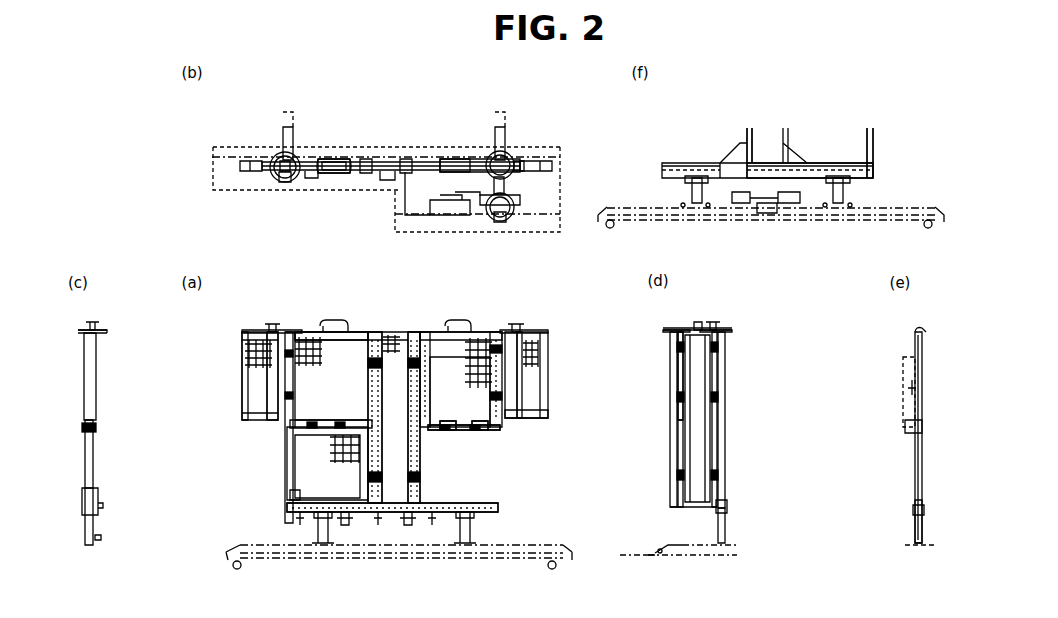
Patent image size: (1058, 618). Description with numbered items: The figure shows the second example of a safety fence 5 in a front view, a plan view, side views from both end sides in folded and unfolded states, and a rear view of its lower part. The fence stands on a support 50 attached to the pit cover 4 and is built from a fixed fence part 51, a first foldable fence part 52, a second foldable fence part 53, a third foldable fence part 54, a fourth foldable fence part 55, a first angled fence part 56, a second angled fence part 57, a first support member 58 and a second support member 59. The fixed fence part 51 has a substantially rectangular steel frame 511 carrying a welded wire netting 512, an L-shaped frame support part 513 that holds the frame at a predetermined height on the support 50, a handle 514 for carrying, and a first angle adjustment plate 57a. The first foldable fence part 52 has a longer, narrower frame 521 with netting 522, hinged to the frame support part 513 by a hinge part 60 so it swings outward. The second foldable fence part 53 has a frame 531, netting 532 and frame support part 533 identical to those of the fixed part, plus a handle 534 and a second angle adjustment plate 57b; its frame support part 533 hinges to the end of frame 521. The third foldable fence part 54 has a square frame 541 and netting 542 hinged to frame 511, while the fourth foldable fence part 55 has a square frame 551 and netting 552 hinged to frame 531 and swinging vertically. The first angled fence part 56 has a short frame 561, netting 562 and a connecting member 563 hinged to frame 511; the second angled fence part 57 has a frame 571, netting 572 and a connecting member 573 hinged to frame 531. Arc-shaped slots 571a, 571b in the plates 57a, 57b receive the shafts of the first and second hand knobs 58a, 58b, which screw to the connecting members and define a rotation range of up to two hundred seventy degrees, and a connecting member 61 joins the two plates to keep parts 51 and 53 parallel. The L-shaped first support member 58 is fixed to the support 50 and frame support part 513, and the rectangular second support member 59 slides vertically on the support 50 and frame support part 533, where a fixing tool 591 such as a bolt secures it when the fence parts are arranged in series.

The pit cover 4 is at (908, 545).
The safety fence 5 is at (943, 340).
The support 50 is at (915, 520).
The fixed fence part 51 is at (918, 345).
The frame 511 is at (428, 332).
The welded wire netting 512 is at (494, 340).
The frame support part 513 is at (740, 150).
The handle 514 is at (915, 328).
The first foldable fence part 52 is at (710, 445).
The frame 521 is at (775, 140).
The welded wire netting 522 is at (400, 332).
The second foldable fence part 53 is at (358, 258).
The frame 531 is at (358, 332).
The welded wire netting 532 is at (312, 340).
The frame support part 533 is at (366, 418).
The handle 534 is at (334, 320).
The third foldable fence part 54 is at (915, 430).
The frame 541 is at (480, 428).
The welded wire netting 542 is at (480, 430).
The fourth foldable fence part 55 is at (670, 458).
The frame 551 is at (865, 150).
The welded wire netting 552 is at (330, 445).
The first angled fence part 56 is at (718, 378).
The frame 561 is at (545, 390).
The welded wire netting 562 is at (538, 358).
The connecting member 563 is at (530, 412).
The second angled fence part 57 is at (678, 368).
The frame 571 is at (242, 370).
The welded wire netting 572 is at (250, 350).
The connecting member 573 is at (272, 385).
The first angle adjustment plate 57a is at (730, 330).
The second angle adjustment plate 57b is at (672, 330).
The slot 571a is at (506, 155).
The slot 571b is at (506, 220).
The first support member 58 is at (495, 505).
The first hand knob 58a is at (714, 322).
The second hand knob 58b is at (273, 324).
The second support member 59 is at (296, 495).
The fixing tool 591 is at (101, 507).
The hinge part 60 is at (711, 475).
The connecting member 61 is at (698, 322).